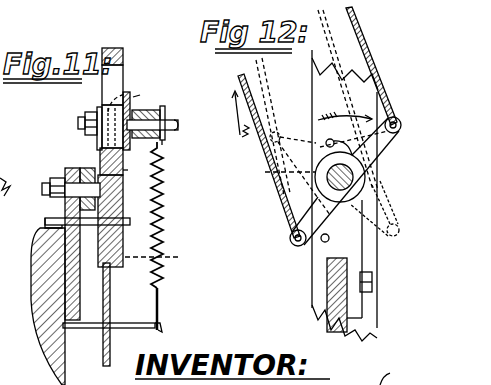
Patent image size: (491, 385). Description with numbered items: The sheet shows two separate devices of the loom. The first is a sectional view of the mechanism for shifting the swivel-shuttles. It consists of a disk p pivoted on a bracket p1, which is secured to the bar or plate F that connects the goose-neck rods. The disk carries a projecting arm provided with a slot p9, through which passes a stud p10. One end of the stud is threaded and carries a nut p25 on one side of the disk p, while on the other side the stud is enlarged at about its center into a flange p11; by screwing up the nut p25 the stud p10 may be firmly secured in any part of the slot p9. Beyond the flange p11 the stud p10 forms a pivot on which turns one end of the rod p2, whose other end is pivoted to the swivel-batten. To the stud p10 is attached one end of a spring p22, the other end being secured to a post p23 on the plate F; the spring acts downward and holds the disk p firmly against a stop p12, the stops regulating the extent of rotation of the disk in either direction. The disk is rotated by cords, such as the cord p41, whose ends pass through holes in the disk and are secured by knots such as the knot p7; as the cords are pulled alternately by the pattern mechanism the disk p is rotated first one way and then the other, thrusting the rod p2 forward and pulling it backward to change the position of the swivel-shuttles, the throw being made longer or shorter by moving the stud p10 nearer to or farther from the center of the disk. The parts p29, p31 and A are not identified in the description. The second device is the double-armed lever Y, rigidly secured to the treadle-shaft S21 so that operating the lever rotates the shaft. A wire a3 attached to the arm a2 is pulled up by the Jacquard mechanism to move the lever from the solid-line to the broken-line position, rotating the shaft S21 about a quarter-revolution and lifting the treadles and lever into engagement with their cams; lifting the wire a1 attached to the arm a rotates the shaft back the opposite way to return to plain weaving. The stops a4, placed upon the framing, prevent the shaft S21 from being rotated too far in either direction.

In FIG. 11, the slot p9 is at (125, 68).
In FIG. 11, the nut p25 is at (88, 104).
In FIG. 11, the flange p11 is at (131, 104).
In FIG. 11, the knot p7 is at (128, 93).
In FIG. 11, the rod p2 is at (158, 100).
In FIG. 11, the stud p10 is at (180, 126).
In FIG. 11, the collar p29 is at (165, 114).
In FIG. 11, the spring p22 is at (160, 160).
In FIG. 11, the plate portion p31 is at (130, 170).
In FIG. 11, the bracket p1 is at (70, 290).
In FIG. 11, the stop p12 is at (126, 228).
In FIG. 11, the disk p is at (158, 257).
In FIG. 11, the cord p41 is at (112, 303).
In FIG. 11, the post p23 is at (165, 325).
In FIG. 11, the bar or plate F is at (36, 330).
In FIG. 12, the frame A is at (364, 328).
In FIG. 12, the wire a1 is at (372, 55).
In FIG. 12, the wire a3 is at (278, 192).
In FIG. 12, the lever Y is at (367, 174).
In FIG. 12, the treadle-shaft S21 is at (276, 172).
In FIG. 12, the arm a is at (402, 126).
In FIG. 12, the arm a2 is at (289, 130).
In FIG. 12, the stop a4 is at (336, 134).